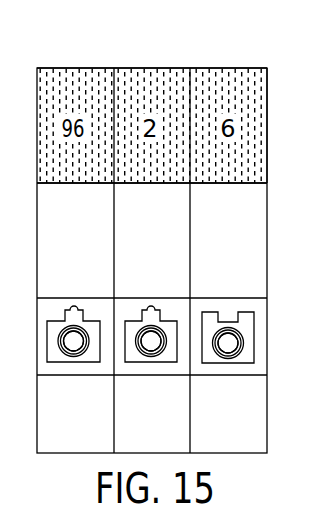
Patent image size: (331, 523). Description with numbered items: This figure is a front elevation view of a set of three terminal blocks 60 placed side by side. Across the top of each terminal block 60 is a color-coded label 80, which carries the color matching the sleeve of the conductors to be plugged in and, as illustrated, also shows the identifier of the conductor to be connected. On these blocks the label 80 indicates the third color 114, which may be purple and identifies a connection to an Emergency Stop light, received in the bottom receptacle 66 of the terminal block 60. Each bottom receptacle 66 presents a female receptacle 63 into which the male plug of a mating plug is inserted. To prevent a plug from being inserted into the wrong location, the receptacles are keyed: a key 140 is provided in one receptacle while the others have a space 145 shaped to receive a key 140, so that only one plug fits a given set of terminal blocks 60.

The terminal block 60 is at (77, 67).
The label 80 is at (38, 83).
The third color 114 is at (263, 133).
The bottom receptacle 66 is at (270, 316).
The space 145 is at (70, 311).
The key 140 is at (227, 321).
The female receptacle 63 is at (77, 357).